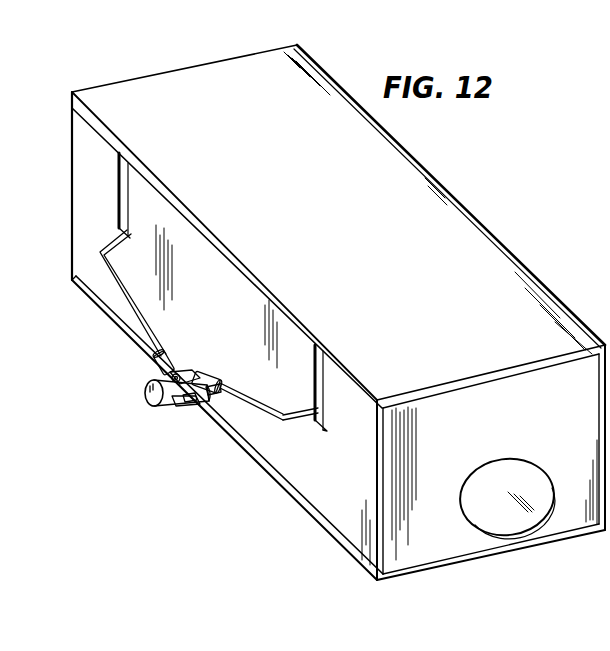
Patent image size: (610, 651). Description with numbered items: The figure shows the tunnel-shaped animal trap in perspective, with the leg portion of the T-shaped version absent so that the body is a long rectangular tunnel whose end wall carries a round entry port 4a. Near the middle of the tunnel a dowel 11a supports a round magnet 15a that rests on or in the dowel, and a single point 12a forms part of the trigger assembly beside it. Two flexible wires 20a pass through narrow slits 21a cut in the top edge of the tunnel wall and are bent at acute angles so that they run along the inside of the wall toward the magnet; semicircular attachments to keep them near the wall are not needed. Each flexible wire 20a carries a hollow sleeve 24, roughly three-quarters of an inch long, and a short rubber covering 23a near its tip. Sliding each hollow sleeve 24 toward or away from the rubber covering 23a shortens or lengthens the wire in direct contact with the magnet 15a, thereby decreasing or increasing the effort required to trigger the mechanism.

The entry port 4a is at (503, 523).
The narrow slit 21a is at (122, 172).
The flexible wire 20a is at (127, 303).
The hollow sleeve 24 is at (193, 373).
The rubber covering 23a is at (173, 365).
The dowel 11a is at (150, 396).
The magnet 15a is at (188, 402).
The single point 12a is at (213, 395).